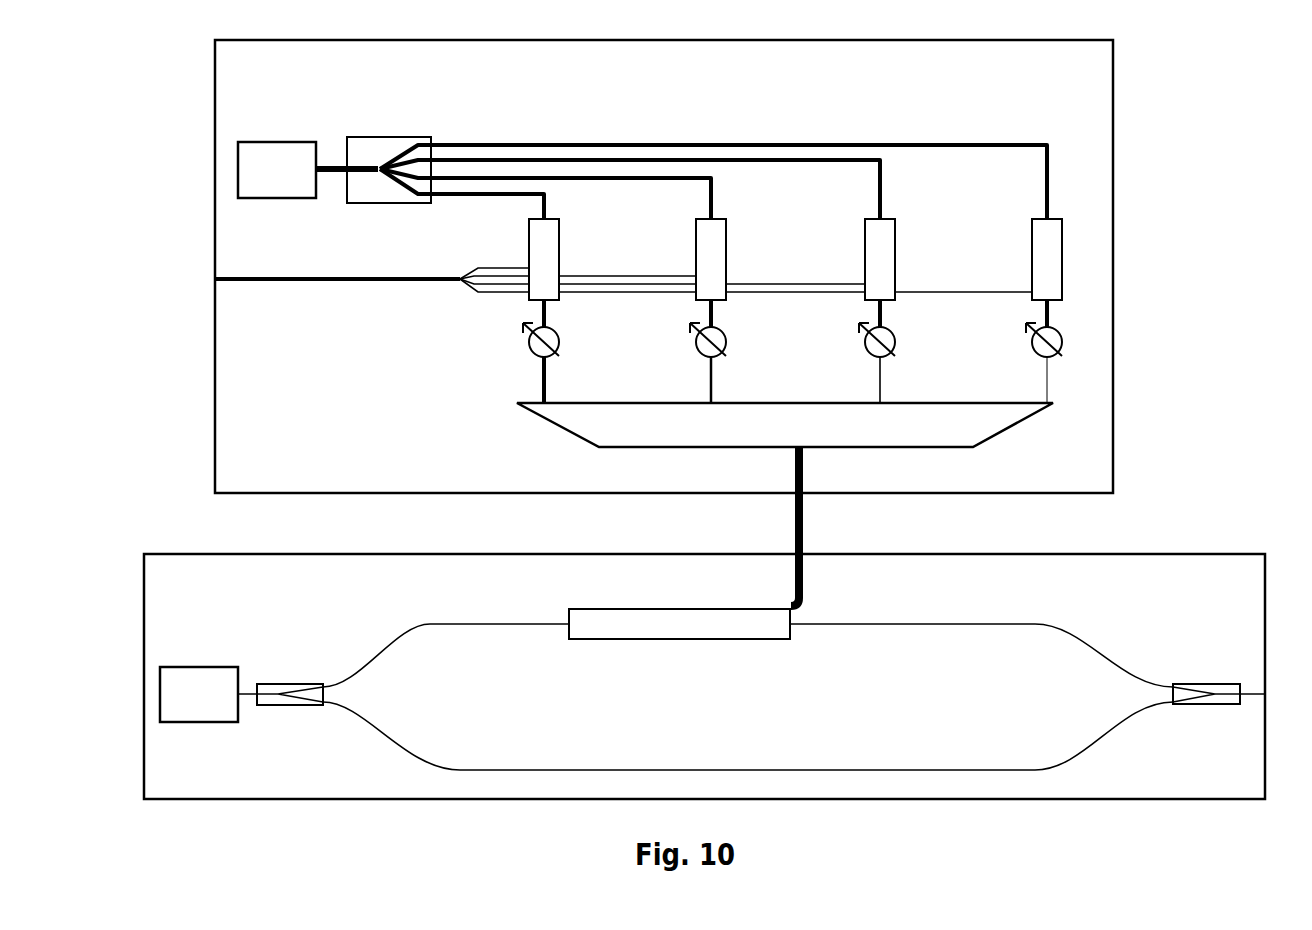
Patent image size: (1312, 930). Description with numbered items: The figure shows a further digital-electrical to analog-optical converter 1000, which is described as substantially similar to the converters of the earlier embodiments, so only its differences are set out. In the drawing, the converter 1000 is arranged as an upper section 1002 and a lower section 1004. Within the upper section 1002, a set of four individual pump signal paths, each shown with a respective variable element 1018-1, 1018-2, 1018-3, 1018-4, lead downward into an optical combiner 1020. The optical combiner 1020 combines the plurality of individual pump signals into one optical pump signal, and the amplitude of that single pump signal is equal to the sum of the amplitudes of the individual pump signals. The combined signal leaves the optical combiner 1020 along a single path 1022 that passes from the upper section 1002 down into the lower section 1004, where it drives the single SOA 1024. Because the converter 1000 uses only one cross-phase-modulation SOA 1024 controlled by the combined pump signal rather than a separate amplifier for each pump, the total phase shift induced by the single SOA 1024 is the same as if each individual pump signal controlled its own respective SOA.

The digital-electrical to analog-optical converter 1000 is at (717, 27).
The digital-electrical to digital-optical converter 1002 is at (1090, 71).
The analog-optical modulator 1004 is at (1240, 577).
The variable optical attenuator 1018-1 is at (529, 343).
The variable optical attenuator 1018-2 is at (696, 343).
The variable optical attenuator 1018-3 is at (865, 343).
The variable optical attenuator 1018-4 is at (1032, 343).
The optical combiner 1020 is at (568, 430).
The combined digital optical signal waveguide 1022 is at (794, 522).
The single SOA 1024 is at (677, 640).